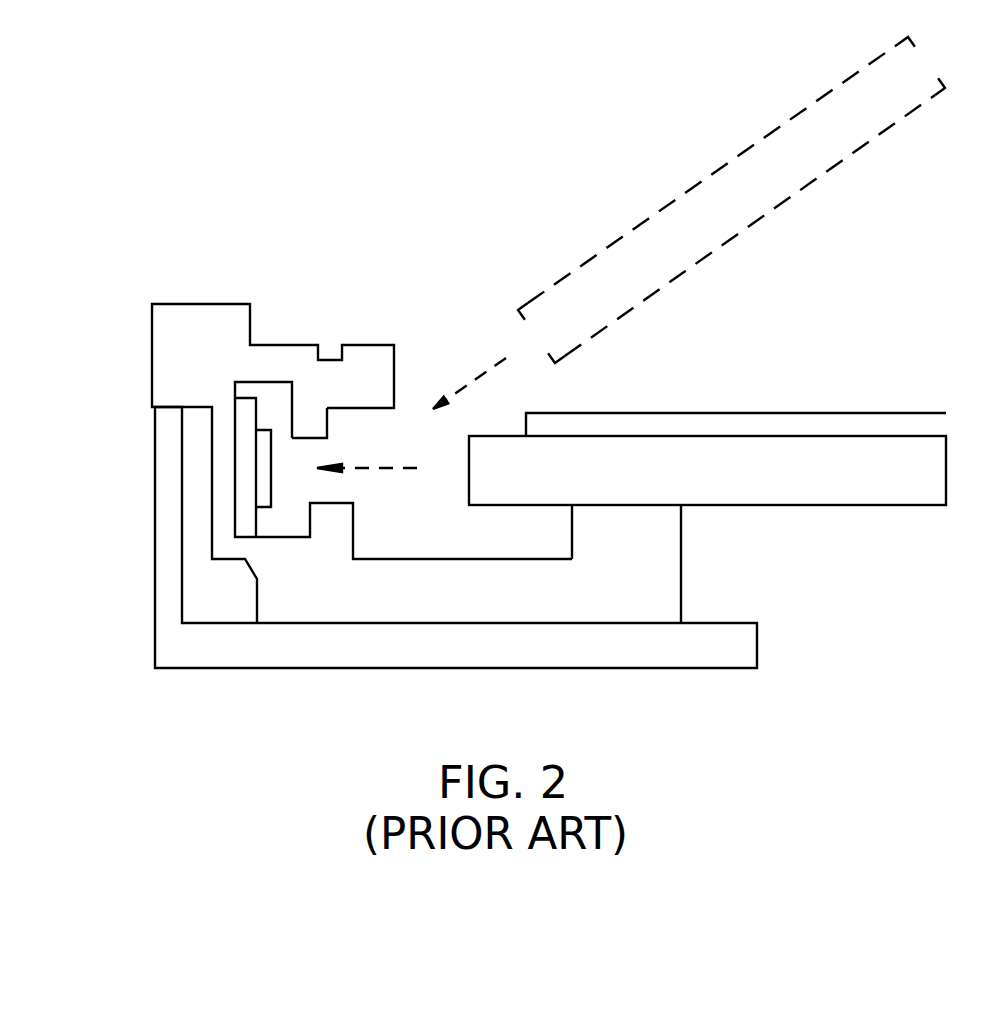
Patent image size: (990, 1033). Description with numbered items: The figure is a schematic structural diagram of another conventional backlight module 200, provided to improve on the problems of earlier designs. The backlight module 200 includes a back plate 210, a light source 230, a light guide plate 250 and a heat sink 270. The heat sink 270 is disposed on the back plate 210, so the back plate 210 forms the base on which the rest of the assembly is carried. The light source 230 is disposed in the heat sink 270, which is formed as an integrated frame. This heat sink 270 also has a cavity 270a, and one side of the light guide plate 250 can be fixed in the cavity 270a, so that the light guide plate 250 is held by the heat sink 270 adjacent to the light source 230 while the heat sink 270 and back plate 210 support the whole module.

The backlight module 200 is at (73, 155).
The back plate 210 is at (262, 647).
The light source 230 is at (265, 468).
The light guide plate 250 is at (703, 453).
The heat sink 270 is at (194, 335).
The cavity 270a is at (306, 462).